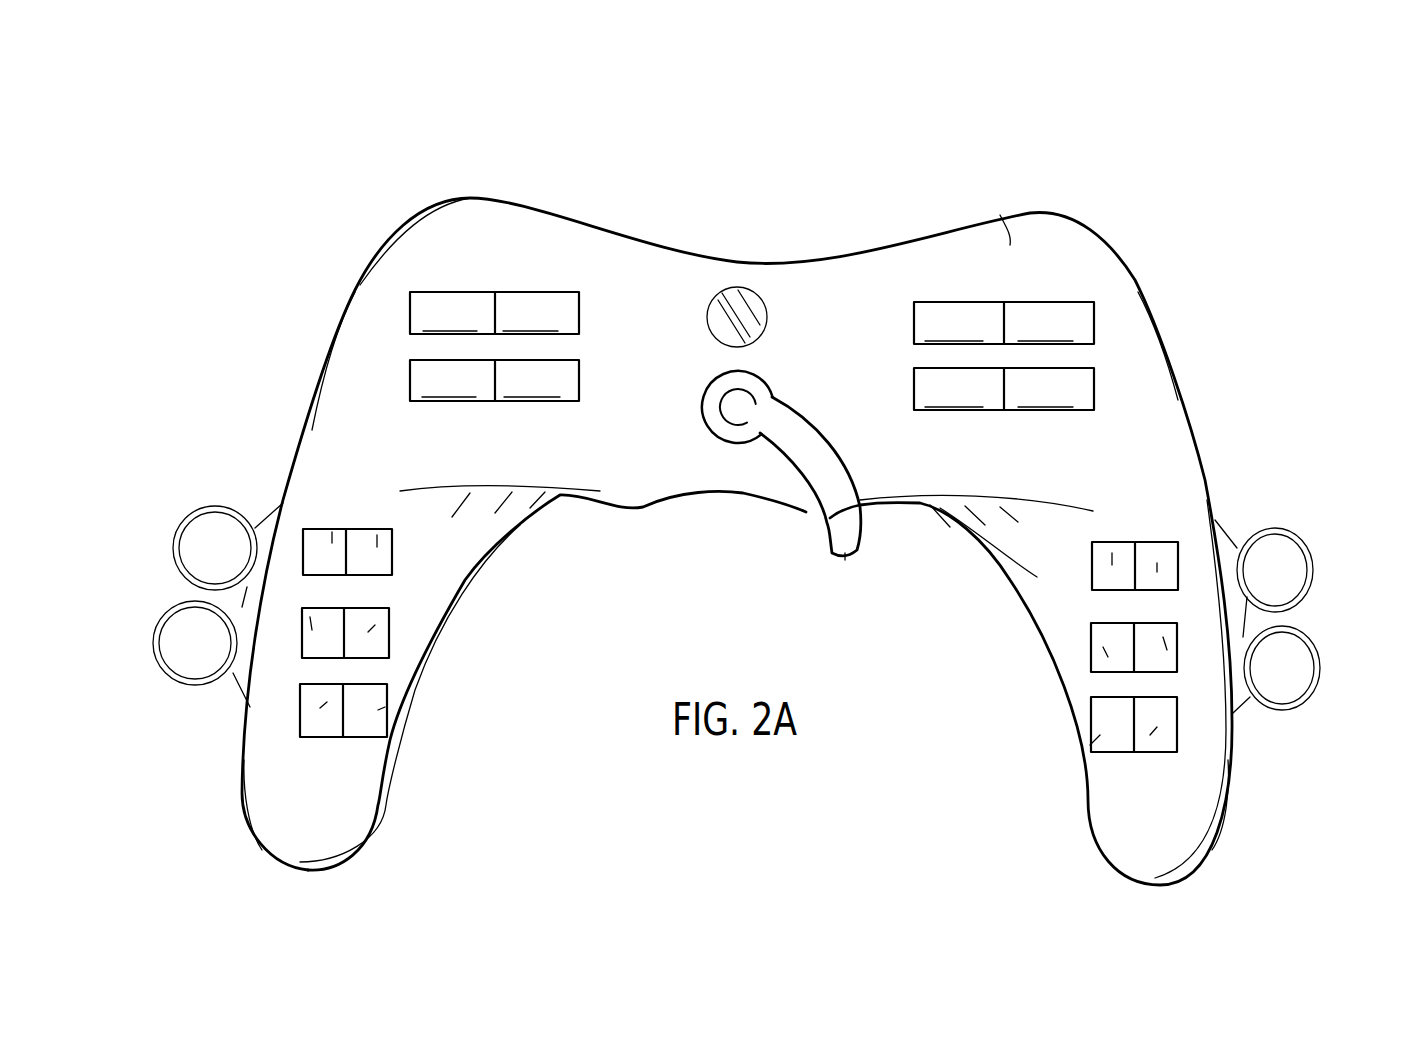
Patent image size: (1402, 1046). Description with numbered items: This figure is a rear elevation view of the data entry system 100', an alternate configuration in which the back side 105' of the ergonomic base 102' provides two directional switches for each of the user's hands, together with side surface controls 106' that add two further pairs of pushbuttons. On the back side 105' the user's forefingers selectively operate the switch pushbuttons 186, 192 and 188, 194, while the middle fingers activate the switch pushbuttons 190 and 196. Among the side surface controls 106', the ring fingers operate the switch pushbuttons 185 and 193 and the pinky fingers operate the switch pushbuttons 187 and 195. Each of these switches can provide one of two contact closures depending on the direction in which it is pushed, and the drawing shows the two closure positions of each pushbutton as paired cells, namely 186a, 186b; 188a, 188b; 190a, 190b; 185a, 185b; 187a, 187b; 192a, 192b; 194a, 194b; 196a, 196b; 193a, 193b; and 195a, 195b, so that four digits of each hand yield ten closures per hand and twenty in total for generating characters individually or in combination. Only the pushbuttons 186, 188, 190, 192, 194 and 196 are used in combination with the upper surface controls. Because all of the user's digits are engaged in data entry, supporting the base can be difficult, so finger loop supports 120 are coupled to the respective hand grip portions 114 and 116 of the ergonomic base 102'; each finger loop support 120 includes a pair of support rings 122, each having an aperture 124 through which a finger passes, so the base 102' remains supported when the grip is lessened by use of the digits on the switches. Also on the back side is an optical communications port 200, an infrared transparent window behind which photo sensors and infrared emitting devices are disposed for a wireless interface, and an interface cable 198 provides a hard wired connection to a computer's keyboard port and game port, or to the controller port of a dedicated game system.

The data entry system 100' is at (934, 115).
The ergonomic base 102' is at (737, 518).
The back side 105' is at (1011, 198).
The side surface controls 106' is at (386, 208).
The hand grip portion 114 is at (1213, 768).
The hand grip portion 116 is at (247, 773).
The finger loop support 120 is at (197, 496).
The support ring 122 is at (180, 518).
The aperture 124 is at (212, 555).
The switch pushbutton 185 is at (1091, 642).
The right middle switch right contact 185a is at (1163, 637).
The right middle switch left contact 185b is at (1103, 647).
The switch pushbutton 186 is at (1082, 307).
The upper right switch contact a 186a is at (1046, 328).
The upper right switch contact b 186b is at (955, 328).
The switch pushbutton 187 is at (1112, 725).
The right lower switch right contact 187a is at (1157, 727).
The right lower switch left contact 187b is at (1090, 745).
The switch pushbutton 188 is at (918, 378).
The lower right switch contact a 188a is at (1046, 394).
The lower right switch contact b 188b is at (955, 394).
The switch pushbutton 190 is at (1092, 567).
The right upper switch right contact 190a is at (1157, 563).
The right upper switch left contact 190b is at (1112, 553).
The switch pushbutton 192 is at (434, 292).
The upper left switch contact a 192a is at (450, 318).
The upper left switch contact b 192b is at (532, 318).
The switch pushbutton 193 is at (389, 637).
The left middle switch left contact 193a is at (310, 617).
The left middle switch right contact 193b is at (368, 632).
The switch pushbutton 194 is at (575, 372).
The lower left switch contact a 194a is at (449, 384).
The lower left switch contact b 194b is at (533, 384).
The switch pushbutton 195 is at (390, 722).
The left lower switch left contact 195a is at (320, 708).
The left lower switch right contact 195b is at (378, 710).
The switch pushbutton 196 is at (393, 555).
The left upper switch left contact 196a is at (332, 543).
The left upper switch right contact 196b is at (377, 547).
The interface cable 198 is at (828, 533).
The optical communications port 200 is at (742, 294).